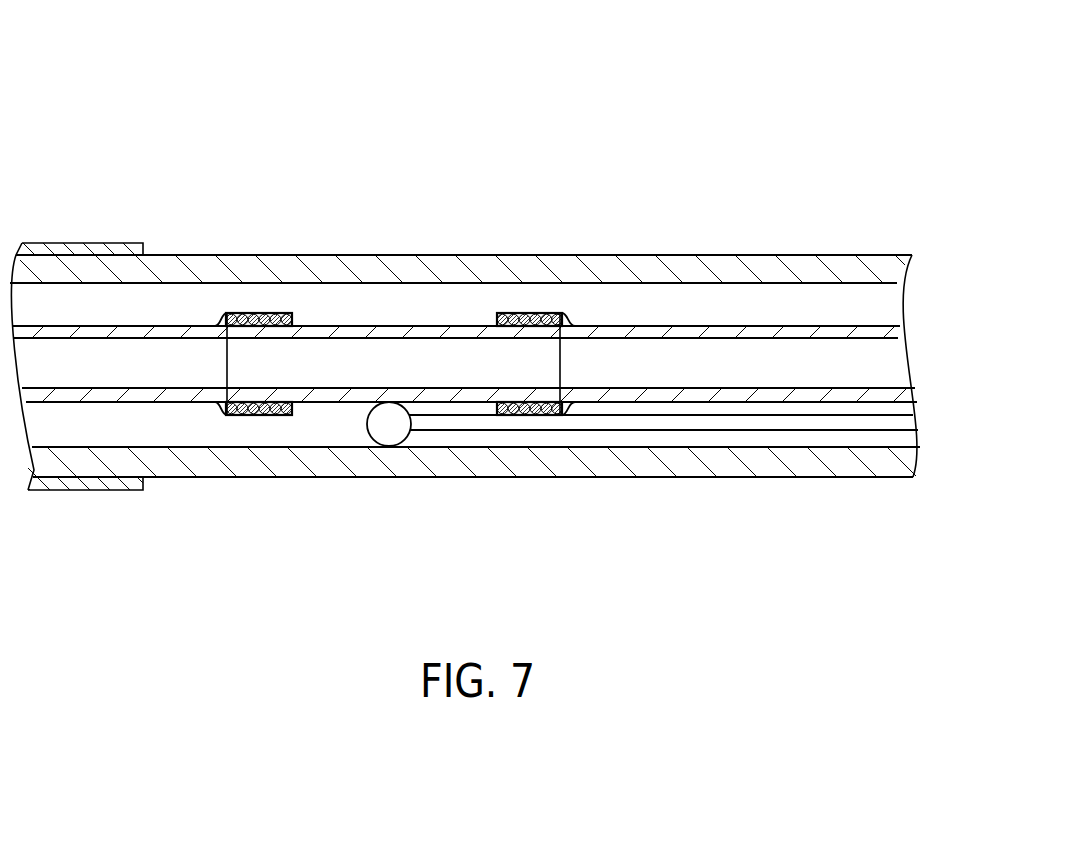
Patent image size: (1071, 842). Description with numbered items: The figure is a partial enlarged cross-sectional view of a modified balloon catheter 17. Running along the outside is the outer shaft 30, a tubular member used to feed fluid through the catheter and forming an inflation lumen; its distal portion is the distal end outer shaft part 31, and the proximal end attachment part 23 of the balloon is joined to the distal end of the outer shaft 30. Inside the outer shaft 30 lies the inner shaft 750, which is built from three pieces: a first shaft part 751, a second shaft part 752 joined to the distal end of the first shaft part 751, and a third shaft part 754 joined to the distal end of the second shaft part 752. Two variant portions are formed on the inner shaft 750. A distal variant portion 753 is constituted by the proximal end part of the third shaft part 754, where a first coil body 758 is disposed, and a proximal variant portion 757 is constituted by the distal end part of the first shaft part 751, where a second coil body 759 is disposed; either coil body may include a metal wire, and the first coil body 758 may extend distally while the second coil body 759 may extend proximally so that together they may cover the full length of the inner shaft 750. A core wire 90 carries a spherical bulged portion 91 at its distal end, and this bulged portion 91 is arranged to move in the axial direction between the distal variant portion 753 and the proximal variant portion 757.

The balloon catheter 17 is at (572, 153).
The proximal end attachment part 23 is at (105, 243).
The outer shaft 30 is at (825, 255).
The distal end outer shaft part 31 is at (847, 477).
The core wire 90 is at (680, 423).
The bulged portion 91 is at (391, 440).
The inner shaft 750 is at (690, 325).
The first shaft part 751 is at (763, 405).
The second shaft part 752 is at (330, 405).
The distal variant portion 753 is at (293, 313).
The third shaft part 754 is at (165, 324).
The proximal variant portion 757 is at (493, 315).
The first coil body 758 is at (253, 313).
The second coil body 759 is at (527, 313).